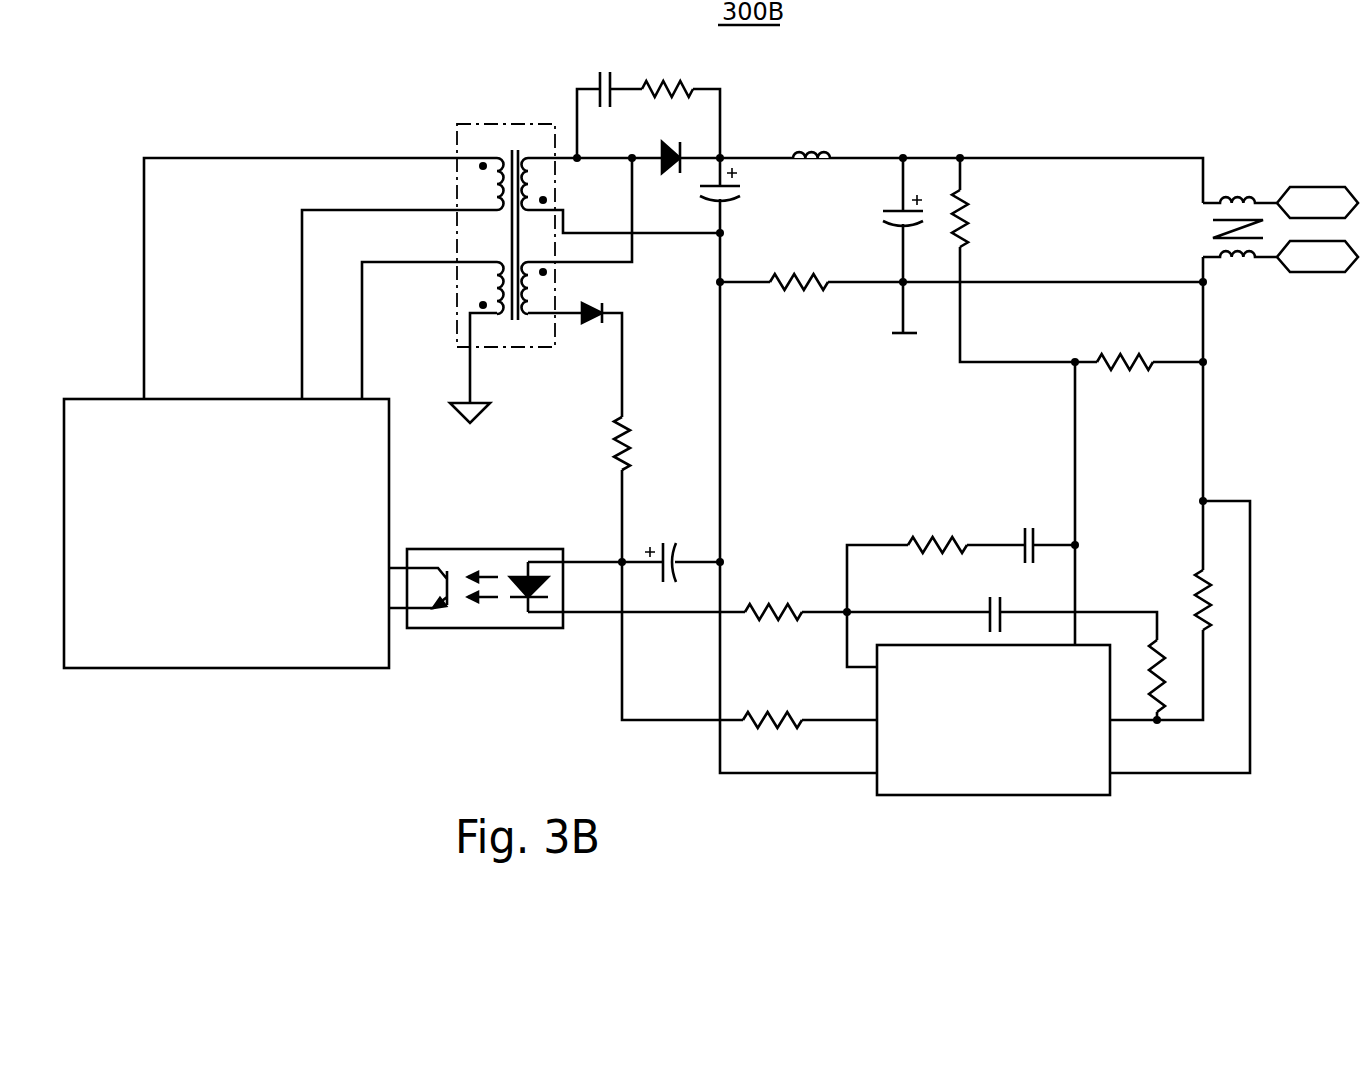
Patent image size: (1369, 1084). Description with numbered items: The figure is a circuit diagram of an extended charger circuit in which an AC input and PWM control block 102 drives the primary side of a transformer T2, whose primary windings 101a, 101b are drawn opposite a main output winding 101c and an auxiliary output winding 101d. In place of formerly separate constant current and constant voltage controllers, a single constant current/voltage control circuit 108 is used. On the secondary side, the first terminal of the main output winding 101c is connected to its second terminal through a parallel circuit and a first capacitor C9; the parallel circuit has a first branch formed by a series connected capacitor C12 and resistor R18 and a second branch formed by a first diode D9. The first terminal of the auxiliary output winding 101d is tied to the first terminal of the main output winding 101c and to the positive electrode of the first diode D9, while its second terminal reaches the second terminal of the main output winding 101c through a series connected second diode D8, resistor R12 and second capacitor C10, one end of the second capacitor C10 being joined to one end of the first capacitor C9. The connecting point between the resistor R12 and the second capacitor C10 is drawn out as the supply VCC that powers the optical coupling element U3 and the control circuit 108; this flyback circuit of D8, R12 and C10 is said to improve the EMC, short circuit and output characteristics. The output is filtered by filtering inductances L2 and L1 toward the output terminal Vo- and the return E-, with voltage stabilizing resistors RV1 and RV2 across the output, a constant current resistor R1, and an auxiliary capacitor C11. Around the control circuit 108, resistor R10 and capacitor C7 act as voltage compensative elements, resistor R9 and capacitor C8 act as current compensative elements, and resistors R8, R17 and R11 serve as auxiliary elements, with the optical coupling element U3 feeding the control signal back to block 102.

The AC input and PWM control circuit 102 is at (283, 654).
The constant current/voltage control circuit 108 is at (1112, 752).
The first primary winding of transformer T2 101a is at (478, 187).
The second primary winding of transformer T2 101b is at (477, 283).
The main output winding 101c is at (545, 173).
The auxiliary output winding 101d is at (543, 303).
The transformer T2 is at (449, 224).
The capacitor C12 is at (613, 70).
The resistor R18 is at (674, 73).
The first diode D9 is at (674, 179).
The first capacitor C9 is at (742, 195).
The filtering inductance L2 is at (811, 137).
The capacitor C11 is at (908, 227).
The voltage stabilizing resistor RV1 is at (988, 218).
The voltage stabilizing resistor RV2 is at (1130, 345).
The filtering inductance L1 is at (1220, 227).
The constant current resistor R1 is at (799, 300).
The negative terminal E- is at (904, 349).
The negative output terminal Vo- is at (1317, 256).
The second diode D8 is at (587, 338).
The resistor R12 is at (649, 443).
The optical coupling element U3 is at (476, 573).
The second capacitor C10 is at (672, 547).
The resistor R8 is at (775, 597).
The resistor R9 is at (926, 534).
The capacitor C8 is at (1006, 535).
The capacitor C7 is at (1017, 606).
The resistor R17 is at (772, 704).
The supply voltage terminal VCC is at (857, 703).
The resistor R11 is at (1185, 587).
The resistor R10 is at (1173, 699).